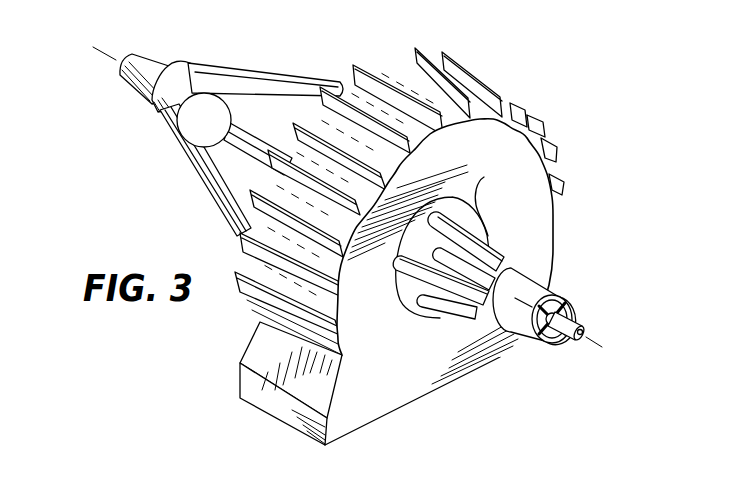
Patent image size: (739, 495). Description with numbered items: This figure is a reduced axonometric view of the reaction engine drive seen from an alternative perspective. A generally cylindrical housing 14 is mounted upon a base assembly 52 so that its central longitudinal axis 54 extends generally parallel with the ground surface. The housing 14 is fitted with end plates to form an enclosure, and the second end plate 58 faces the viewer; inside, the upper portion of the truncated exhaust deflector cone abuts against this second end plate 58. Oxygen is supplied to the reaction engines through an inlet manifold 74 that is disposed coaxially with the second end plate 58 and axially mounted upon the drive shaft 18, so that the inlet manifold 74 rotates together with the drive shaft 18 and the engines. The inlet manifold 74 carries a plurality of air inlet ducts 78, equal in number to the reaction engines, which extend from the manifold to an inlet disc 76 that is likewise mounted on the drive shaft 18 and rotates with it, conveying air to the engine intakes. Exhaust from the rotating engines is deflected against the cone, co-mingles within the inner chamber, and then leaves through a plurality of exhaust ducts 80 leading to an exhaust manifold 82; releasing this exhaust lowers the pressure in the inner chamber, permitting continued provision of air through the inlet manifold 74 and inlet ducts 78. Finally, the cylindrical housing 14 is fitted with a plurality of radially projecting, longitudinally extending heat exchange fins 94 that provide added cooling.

The cylindrical housing 14 is at (562, 180).
The drive shaft 18 is at (583, 329).
The base assembly 52 is at (329, 447).
The central longitudinal axis 54 is at (107, 58).
The second end plate 58 is at (524, 209).
The inlet manifold 74 is at (560, 278).
The inlet disc 76 is at (484, 177).
The air inlet ducts 78 is at (492, 258).
The exhaust ducts 80 is at (250, 76).
The exhaust manifold 82 is at (188, 63).
The heat exchange fins 94 is at (357, 64).